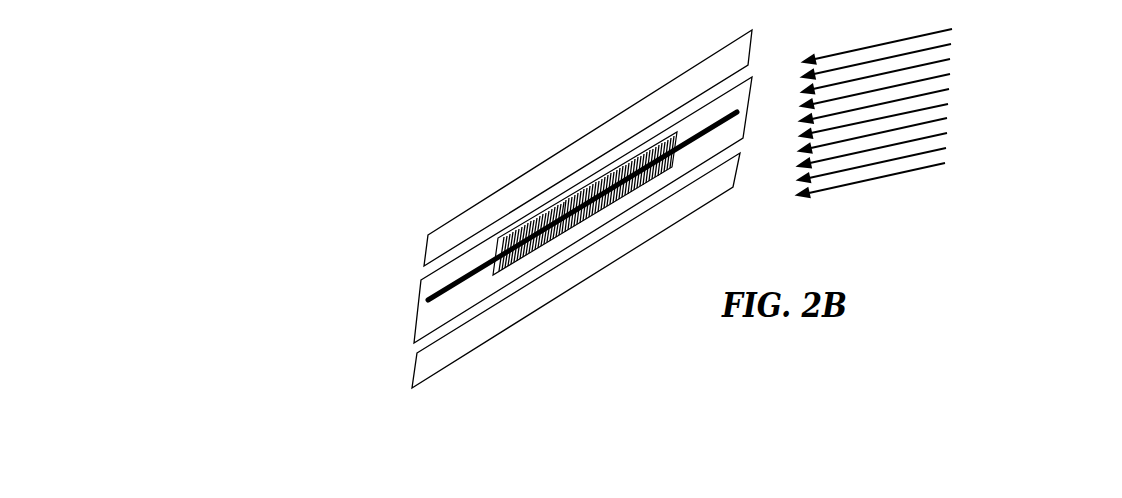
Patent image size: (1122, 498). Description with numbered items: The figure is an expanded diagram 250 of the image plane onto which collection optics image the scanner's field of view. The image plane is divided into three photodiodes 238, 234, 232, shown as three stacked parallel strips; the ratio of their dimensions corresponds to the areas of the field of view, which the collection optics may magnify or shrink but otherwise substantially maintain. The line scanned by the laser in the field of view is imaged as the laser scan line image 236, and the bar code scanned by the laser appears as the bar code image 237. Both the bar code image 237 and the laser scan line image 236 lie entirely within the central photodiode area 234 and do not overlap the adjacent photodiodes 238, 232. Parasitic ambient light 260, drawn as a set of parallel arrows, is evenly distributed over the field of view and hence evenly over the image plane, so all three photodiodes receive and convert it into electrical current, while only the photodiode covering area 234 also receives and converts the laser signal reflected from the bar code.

The expanded diagram 250 is at (478, 64).
The photodiode 232 is at (497, 335).
The photodiode area 234 is at (415, 332).
The image of the laser scan line 236 is at (428, 298).
The bar code image 237 is at (573, 197).
The photodiode 238 is at (454, 217).
The parasitic ambient light 260 is at (987, 17).